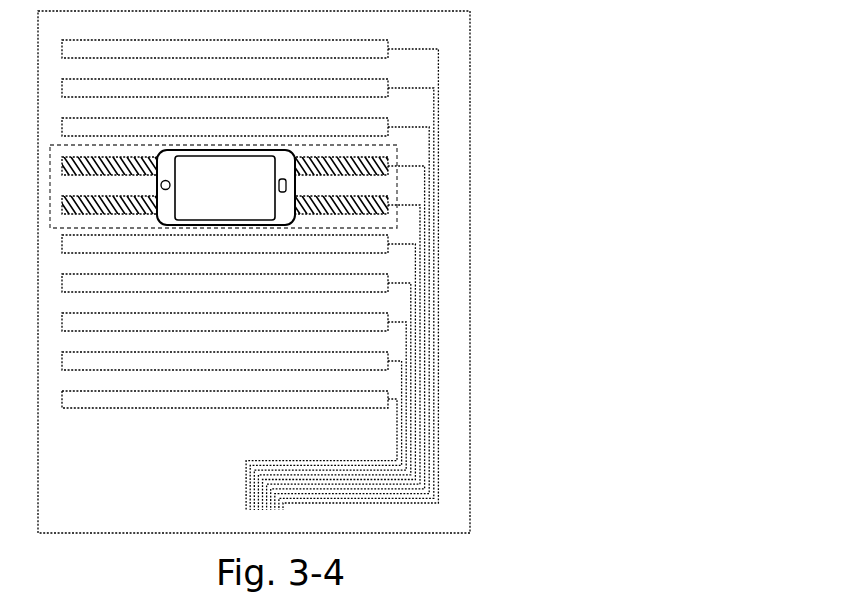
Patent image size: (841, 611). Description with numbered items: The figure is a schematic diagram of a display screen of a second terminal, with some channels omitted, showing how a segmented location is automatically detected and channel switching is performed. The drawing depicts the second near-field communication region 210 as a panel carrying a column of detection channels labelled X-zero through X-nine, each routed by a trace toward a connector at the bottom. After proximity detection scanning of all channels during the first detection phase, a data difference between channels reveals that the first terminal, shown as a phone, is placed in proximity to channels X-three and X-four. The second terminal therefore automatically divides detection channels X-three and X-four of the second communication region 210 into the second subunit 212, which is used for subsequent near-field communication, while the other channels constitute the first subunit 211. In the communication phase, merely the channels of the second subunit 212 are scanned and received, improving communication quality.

The second near-field communication region 210 is at (470, 90).
The first subunit 211 is at (345, 107).
The second subunit 212 is at (420, 210).